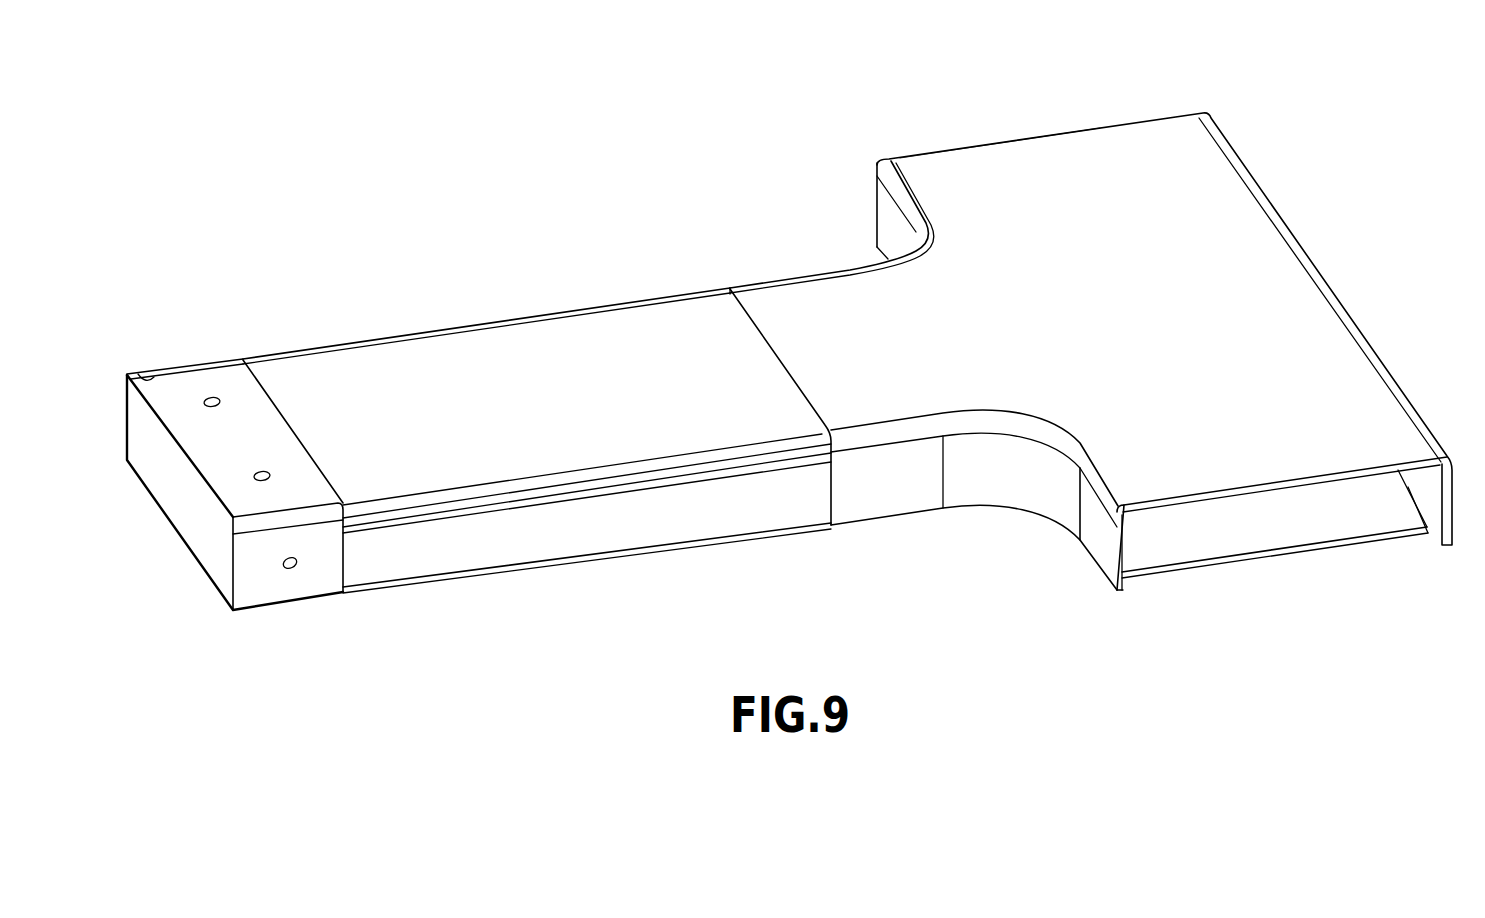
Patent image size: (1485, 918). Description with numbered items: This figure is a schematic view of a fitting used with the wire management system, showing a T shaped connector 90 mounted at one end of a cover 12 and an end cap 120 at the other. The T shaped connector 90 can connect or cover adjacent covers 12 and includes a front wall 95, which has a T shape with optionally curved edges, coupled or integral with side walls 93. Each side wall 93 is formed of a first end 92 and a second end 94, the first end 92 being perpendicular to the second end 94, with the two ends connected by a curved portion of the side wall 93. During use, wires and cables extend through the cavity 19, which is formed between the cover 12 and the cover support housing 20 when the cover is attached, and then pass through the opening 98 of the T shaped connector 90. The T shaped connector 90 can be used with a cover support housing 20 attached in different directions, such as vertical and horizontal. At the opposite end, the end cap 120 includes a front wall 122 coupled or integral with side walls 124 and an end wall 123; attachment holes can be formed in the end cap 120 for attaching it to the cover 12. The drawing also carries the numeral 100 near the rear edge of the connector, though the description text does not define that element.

The cover 12 is at (452, 353).
The cavity 19 is at (408, 555).
The cover support housing 20 is at (498, 542).
The T shaped connector 90 is at (1030, 143).
The first end 92 is at (874, 187).
The side wall 93 is at (910, 252).
The second end 94 is at (768, 282).
The front wall 95 is at (1237, 258).
The opening 98 is at (1244, 545).
The rear edge of platform 100 is at (975, 142).
The end cap 120 is at (138, 374).
The front wall 122 is at (240, 402).
The end wall 123 is at (158, 505).
The side walls 124 is at (215, 360).